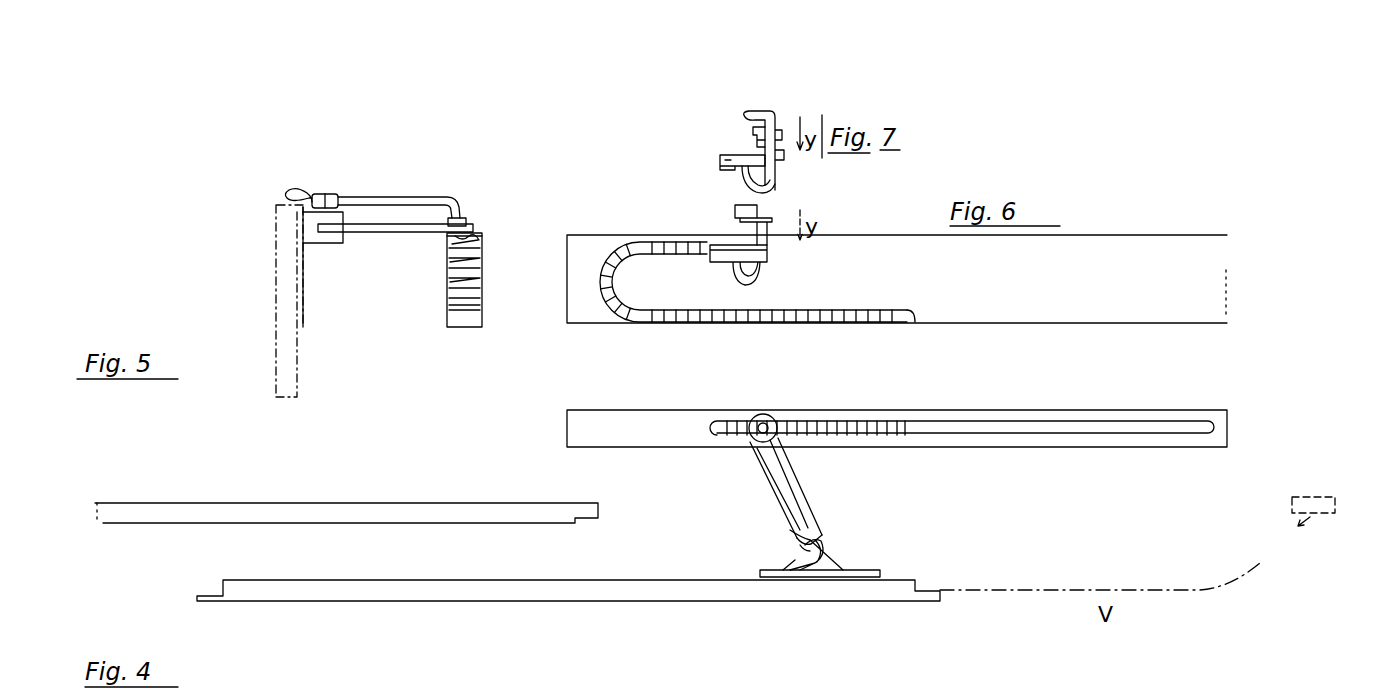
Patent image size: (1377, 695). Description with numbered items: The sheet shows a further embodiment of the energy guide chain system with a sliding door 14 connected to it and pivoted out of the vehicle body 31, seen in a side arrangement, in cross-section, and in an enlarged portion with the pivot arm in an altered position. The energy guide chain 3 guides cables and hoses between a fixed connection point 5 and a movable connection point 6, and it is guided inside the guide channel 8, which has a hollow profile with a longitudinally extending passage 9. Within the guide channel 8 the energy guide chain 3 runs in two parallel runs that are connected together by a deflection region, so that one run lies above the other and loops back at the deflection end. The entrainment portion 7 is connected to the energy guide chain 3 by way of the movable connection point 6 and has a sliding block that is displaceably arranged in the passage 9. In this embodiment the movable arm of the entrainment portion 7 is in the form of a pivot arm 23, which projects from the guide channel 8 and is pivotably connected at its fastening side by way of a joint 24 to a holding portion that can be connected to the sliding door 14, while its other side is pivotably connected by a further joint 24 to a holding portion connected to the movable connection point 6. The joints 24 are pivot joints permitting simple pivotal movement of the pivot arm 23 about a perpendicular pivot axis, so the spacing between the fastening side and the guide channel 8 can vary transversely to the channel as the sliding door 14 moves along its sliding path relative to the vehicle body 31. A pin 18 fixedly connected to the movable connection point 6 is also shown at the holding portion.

In FIG. 5, the energy guide chain 3 is at (447, 284).
In FIG. 6, the energy guide chain 3 is at (740, 323).
In FIG. 6, the fixed connection point 5 is at (900, 325).
In FIG. 6, the movable connection point 6 is at (763, 283).
In FIG. 7, the entrainment portion 7 is at (754, 109).
In FIG. 5, the guide channel 8 is at (448, 307).
In FIG. 4, the passage 9 is at (1080, 427).
In FIG. 5, the sliding door 14 is at (283, 263).
In FIG. 4, the sliding door 14 is at (495, 593).
In FIG. 7, the pin 18 is at (788, 122).
In FIG. 7, the pivot arm 23 is at (720, 180).
In FIG. 6, the pivot arm 23 is at (744, 225).
In FIG. 4, the pivot arm 23 is at (792, 478).
In FIG. 5, the joint 24 is at (452, 213).
In FIG. 4, the vehicle body 31 is at (107, 525).